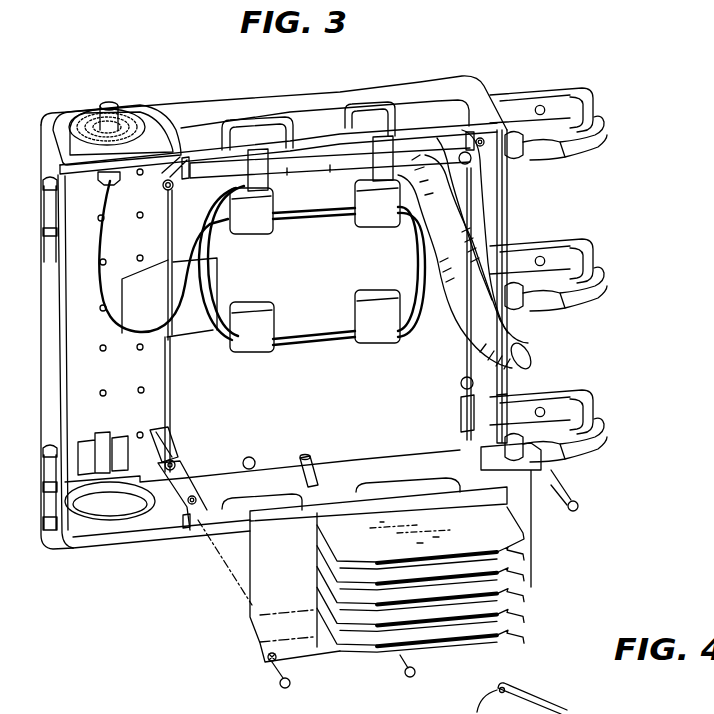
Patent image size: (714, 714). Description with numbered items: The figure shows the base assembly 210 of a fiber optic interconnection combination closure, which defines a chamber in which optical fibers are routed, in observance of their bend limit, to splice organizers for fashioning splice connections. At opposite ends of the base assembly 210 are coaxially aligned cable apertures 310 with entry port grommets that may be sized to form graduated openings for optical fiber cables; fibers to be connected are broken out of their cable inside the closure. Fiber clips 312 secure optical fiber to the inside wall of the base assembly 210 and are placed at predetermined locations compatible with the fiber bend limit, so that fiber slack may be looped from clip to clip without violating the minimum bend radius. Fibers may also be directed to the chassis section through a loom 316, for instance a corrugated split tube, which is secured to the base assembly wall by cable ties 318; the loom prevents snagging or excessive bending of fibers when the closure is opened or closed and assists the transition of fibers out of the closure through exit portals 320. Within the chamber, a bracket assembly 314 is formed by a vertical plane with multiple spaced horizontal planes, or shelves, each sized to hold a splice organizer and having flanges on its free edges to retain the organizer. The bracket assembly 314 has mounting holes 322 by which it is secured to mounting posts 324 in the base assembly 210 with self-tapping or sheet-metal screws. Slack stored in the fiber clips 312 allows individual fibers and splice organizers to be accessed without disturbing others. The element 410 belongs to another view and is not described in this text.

In FIG. 3, the base assembly 210 is at (596, 64).
In FIG. 3, the cable apertures 310 is at (88, 120).
In FIG. 3, the fiber clips 312 is at (266, 196).
In FIG. 3, the bracket assembly 314 is at (510, 562).
In FIG. 3, the loom 316 is at (516, 338).
In FIG. 3, the cable ties 318 is at (212, 158).
In FIG. 3, the exit portals 320 is at (511, 390).
In FIG. 3, the mounting holes 322 is at (270, 662).
In FIG. 3, the mounting posts 324 is at (198, 527).
In FIG. 4, the rod 410 is at (561, 710).